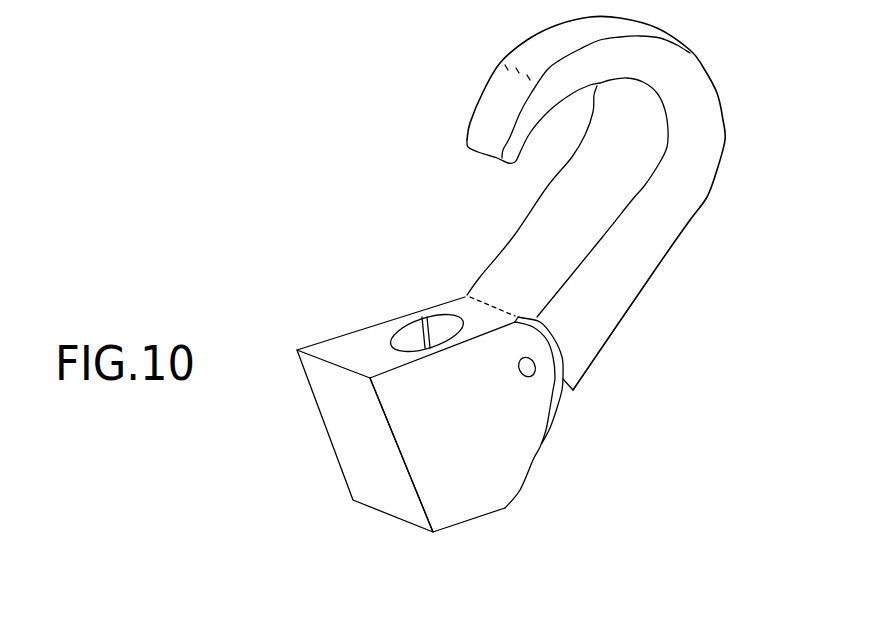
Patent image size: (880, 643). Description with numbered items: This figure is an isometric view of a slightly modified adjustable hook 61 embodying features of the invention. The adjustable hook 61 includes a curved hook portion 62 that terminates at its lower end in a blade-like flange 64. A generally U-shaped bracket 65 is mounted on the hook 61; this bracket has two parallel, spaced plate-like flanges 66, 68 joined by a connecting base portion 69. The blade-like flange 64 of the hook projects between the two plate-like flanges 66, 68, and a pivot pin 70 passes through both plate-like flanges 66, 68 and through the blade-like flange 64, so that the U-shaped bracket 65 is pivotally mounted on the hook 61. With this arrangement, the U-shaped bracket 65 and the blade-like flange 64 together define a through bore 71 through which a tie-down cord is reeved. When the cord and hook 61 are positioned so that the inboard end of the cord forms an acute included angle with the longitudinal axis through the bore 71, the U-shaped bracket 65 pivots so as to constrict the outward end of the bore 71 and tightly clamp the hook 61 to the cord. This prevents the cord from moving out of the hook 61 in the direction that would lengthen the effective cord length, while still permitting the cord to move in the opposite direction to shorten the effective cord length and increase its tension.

The adjustable hook 61 is at (418, 165).
The hook portion 62 is at (650, 238).
The blade-like flange 64 is at (467, 328).
The U-shaped bracket 65 is at (403, 541).
The plate-like flange 66 is at (432, 307).
The plate-like flange 68 is at (490, 472).
The connecting base portion 69 is at (348, 442).
The pivot pin 70 is at (523, 372).
The through bore 71 is at (392, 342).